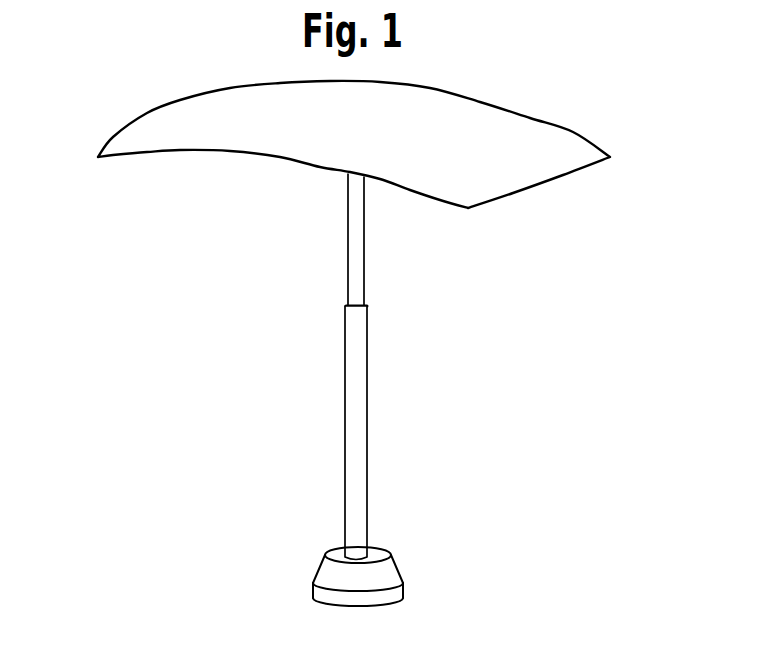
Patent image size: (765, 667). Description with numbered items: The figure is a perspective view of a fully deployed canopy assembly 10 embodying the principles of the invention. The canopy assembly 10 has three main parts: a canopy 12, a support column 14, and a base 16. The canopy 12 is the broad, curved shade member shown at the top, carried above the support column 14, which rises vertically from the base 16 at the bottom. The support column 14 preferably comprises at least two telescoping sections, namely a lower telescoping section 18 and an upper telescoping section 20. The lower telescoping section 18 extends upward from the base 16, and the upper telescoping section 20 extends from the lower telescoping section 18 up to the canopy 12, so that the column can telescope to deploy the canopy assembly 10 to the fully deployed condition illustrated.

The canopy assembly 10 is at (152, 245).
The canopy 12 is at (570, 125).
The support column 14 is at (351, 341).
The base 16 is at (395, 575).
The lower telescoping section 18 is at (360, 379).
The upper telescoping section 20 is at (352, 258).